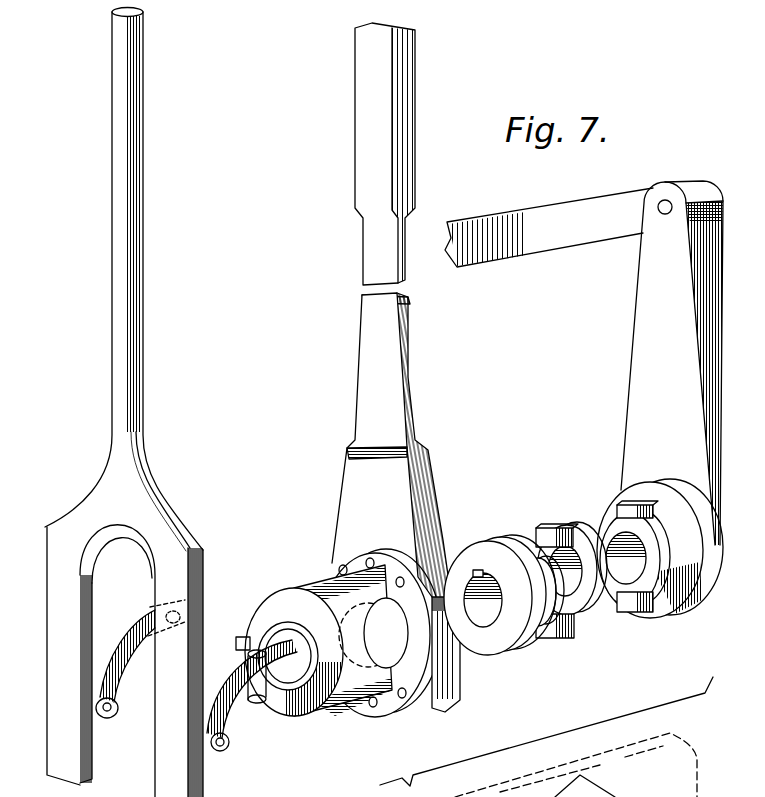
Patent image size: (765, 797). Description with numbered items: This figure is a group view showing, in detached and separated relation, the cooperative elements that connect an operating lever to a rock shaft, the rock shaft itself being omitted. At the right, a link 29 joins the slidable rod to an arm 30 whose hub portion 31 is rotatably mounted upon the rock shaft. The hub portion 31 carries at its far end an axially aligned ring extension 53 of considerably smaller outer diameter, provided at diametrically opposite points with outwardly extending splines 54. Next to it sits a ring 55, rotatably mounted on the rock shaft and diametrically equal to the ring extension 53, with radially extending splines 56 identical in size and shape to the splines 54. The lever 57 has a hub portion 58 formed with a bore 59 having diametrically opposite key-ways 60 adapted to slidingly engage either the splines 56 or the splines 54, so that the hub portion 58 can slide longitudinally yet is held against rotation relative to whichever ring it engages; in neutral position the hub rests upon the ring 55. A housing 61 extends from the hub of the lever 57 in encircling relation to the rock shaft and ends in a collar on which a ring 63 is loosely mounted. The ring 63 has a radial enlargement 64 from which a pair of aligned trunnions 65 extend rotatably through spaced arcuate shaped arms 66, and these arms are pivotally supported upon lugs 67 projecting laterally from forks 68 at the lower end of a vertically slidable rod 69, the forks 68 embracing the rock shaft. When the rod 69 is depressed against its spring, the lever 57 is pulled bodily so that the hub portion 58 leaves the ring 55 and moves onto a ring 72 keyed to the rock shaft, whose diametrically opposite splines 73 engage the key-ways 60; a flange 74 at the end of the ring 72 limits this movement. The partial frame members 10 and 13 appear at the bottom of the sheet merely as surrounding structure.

The base 10 is at (613, 789).
The frame member 13 is at (546, 737).
The link 29 is at (539, 243).
The arm 30 is at (636, 344).
The hub portion 31 is at (700, 590).
The ring extension 53 is at (613, 588).
The splines 54 is at (628, 505).
The ring 55 is at (575, 548).
The splines 56 is at (539, 538).
The lever 57 is at (403, 386).
The hub portion 58 is at (452, 678).
The bore 59 is at (400, 642).
The key-ways 60 is at (392, 572).
The housing 61 is at (302, 590).
The ring 63 is at (245, 705).
The radial enlargement 64 is at (238, 648).
The trunnions 65 is at (196, 626).
The arcuate shaped arms 66 is at (127, 630).
The lugs 67 is at (213, 752).
The forks 68 is at (60, 642).
The rod 69 is at (133, 275).
The ring 72 is at (528, 560).
The splines 73 is at (505, 545).
The flange 74 is at (459, 557).